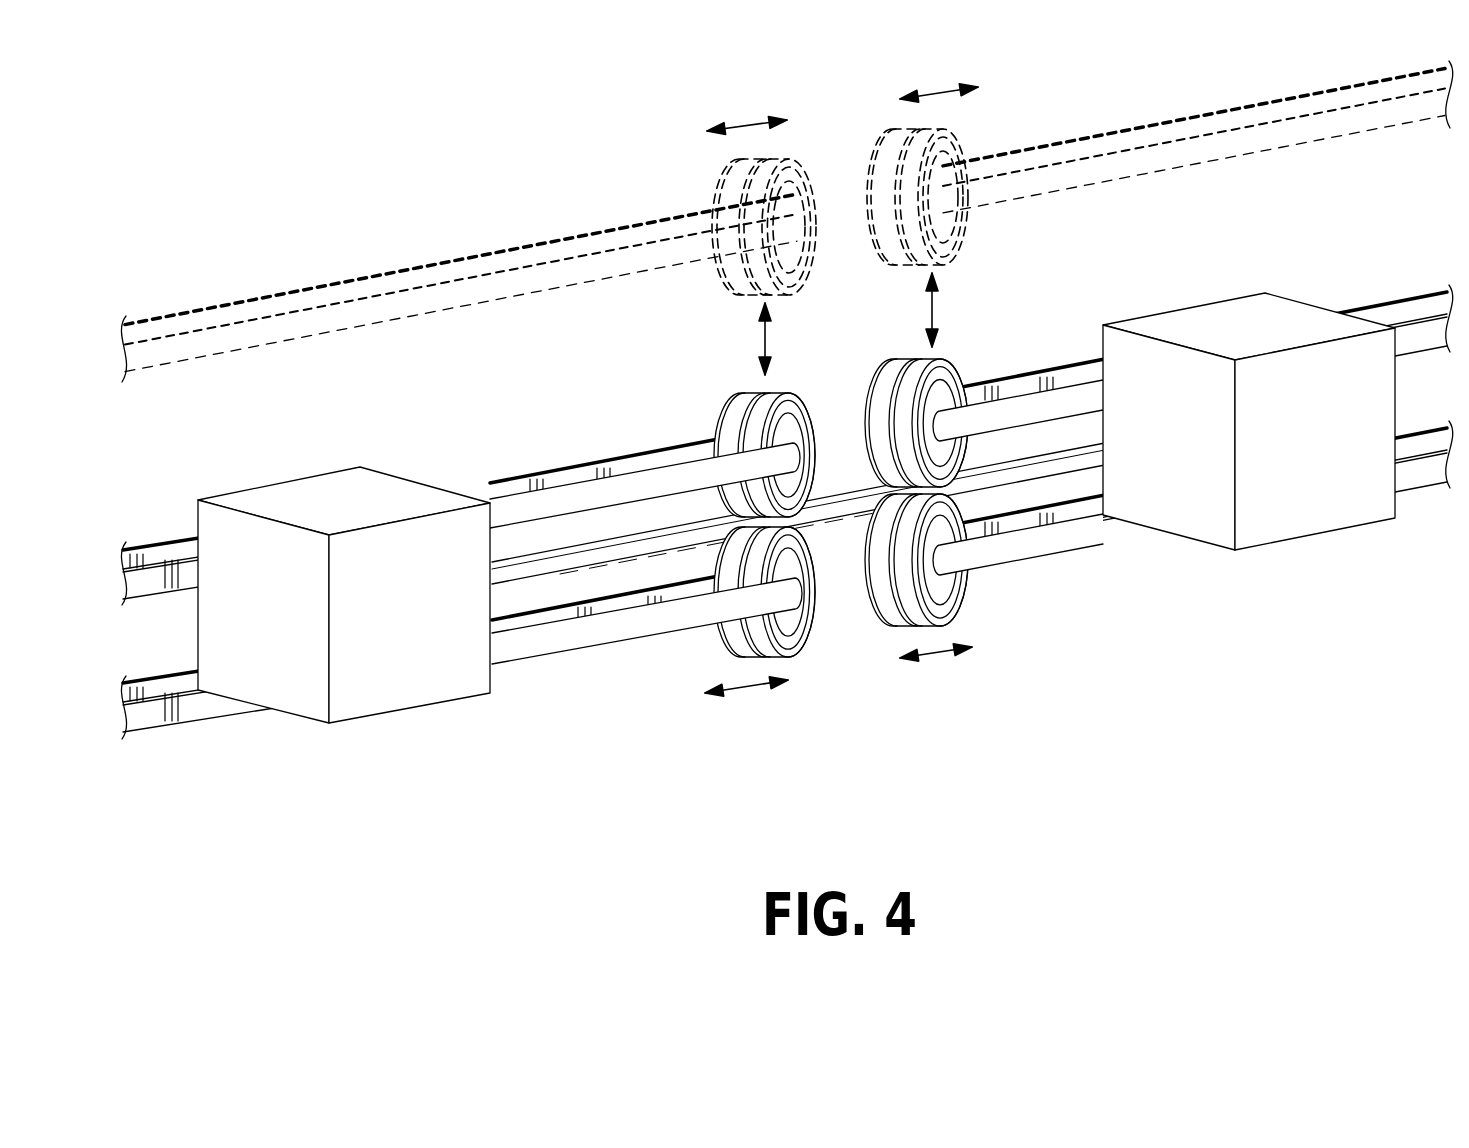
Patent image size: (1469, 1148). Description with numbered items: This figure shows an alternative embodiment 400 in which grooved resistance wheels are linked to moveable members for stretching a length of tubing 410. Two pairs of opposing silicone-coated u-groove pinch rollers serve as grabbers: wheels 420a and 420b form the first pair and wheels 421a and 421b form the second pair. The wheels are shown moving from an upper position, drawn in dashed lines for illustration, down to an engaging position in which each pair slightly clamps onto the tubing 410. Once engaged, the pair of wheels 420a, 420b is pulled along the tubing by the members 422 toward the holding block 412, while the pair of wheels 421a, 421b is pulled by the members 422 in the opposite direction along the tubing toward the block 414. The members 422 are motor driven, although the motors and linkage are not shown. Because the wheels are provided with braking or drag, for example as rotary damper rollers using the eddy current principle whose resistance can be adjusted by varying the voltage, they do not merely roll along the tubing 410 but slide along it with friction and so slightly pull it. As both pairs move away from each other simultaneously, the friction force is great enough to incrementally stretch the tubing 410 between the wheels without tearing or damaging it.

The roller positioning system 400 is at (410, 183).
The tubing 410 is at (1135, 450).
The holding block 412 is at (340, 487).
The block 414 is at (1198, 322).
The wheel 420a is at (740, 392).
The wheel 420b is at (792, 653).
The wheel 421a is at (923, 357).
The wheel 421b is at (963, 607).
The members 422 is at (1020, 415).